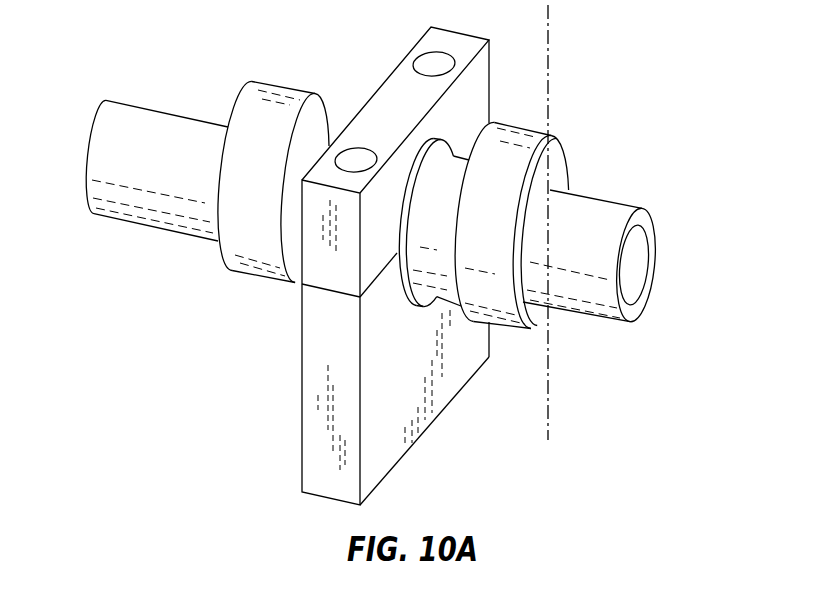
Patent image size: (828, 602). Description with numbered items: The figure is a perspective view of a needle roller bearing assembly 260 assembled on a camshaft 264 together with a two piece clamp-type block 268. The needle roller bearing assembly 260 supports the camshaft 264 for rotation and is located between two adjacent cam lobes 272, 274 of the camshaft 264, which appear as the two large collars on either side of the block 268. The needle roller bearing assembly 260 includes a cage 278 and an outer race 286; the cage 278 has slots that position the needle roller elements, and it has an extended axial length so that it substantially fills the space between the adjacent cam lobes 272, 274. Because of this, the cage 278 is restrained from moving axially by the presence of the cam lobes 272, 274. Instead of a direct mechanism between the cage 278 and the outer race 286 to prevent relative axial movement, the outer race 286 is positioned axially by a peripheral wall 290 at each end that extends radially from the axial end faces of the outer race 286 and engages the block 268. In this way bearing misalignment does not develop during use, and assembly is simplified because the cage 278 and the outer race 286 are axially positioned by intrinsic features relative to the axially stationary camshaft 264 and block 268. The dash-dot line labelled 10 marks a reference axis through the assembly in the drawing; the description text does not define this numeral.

The axis line 10 is at (543, 31).
The needle roller bearing assembly 260 is at (446, 233).
The camshaft 264 is at (128, 73).
The two piece clamp-type block 268 is at (313, 443).
The cam lobe 272 is at (243, 100).
The cam lobe 274 is at (560, 170).
The cage 278 is at (454, 282).
The outer race 286 is at (420, 158).
The peripheral wall 290 is at (407, 305).